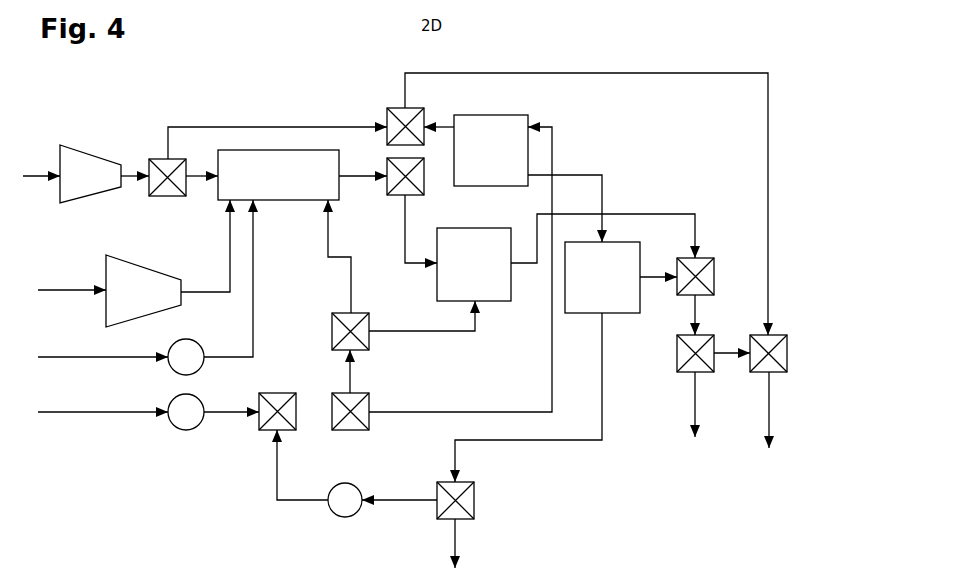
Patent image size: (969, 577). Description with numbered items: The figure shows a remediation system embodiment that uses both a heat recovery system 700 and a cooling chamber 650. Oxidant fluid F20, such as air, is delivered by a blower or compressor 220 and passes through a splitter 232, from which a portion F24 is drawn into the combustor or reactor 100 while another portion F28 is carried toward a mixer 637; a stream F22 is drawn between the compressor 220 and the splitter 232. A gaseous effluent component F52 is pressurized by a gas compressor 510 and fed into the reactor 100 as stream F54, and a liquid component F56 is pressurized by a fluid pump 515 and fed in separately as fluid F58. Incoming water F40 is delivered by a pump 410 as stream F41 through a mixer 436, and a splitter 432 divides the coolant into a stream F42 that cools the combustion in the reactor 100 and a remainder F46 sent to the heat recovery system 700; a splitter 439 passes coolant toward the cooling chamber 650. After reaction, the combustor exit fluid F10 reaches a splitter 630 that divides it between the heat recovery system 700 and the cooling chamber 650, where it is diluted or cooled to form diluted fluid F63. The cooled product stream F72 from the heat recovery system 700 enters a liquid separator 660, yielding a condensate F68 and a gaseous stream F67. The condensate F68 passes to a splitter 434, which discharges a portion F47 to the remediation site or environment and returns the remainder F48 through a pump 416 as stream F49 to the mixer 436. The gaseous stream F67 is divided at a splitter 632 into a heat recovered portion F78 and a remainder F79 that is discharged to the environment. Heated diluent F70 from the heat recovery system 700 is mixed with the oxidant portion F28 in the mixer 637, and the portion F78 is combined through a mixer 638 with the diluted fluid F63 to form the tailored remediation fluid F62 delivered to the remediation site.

The reactor 100 is at (293, 185).
The blower or compressor 220 is at (106, 186).
The splitter 232 is at (152, 160).
The pump 410 is at (184, 431).
The pump 416 is at (352, 484).
The splitter 432 is at (333, 396).
The splitter 434 is at (476, 500).
The mixer 436 is at (262, 394).
The splitter 439 is at (384, 303).
The gas compressor 510 is at (158, 300).
The fluid pump 515 is at (187, 339).
The splitter 630 is at (390, 194).
The splitter 632 is at (676, 354).
The mixer 637 is at (388, 110).
The mixer 638 is at (790, 352).
The cooling chamber 650 is at (488, 274).
The liquid separator 660 is at (617, 287).
The heat recovery system (HRSG) 700 is at (505, 160).
The combustor exit fluid F10 is at (364, 176).
The oxidant fluid F20 is at (36, 179).
The compressed gas stream F22 is at (134, 179).
The portion of oxidant fluid F24 is at (206, 175).
The portion of oxidant fluid F28 is at (252, 126).
The water stream / liquid diluent F40 is at (88, 414).
The coolant portion F41 is at (232, 414).
The coolant stream F42 is at (326, 238).
The remainder coolant fluid F46 is at (452, 413).
The condensate portion F47 is at (458, 542).
The remainder condensate stream F48 is at (410, 502).
The pumped recycle stream F49 is at (276, 484).
The gaseous effluent component F52 is at (72, 290).
The fluid stream F54 is at (228, 257).
The liquid effluent component F56 is at (88, 356).
The fluid stream F58 is at (255, 298).
The tailored remediation fluid F62 is at (770, 402).
The diluted fluid F63 is at (646, 213).
The gaseous components stream F67 is at (671, 276).
The condensate / liquid stream F68 is at (604, 372).
The heated diluent F70 is at (436, 126).
The cooled combustor exit stream F72 is at (582, 174).
The heat recovered portion F78 is at (738, 351).
The remainder heat recovered product fluid F79 is at (697, 402).